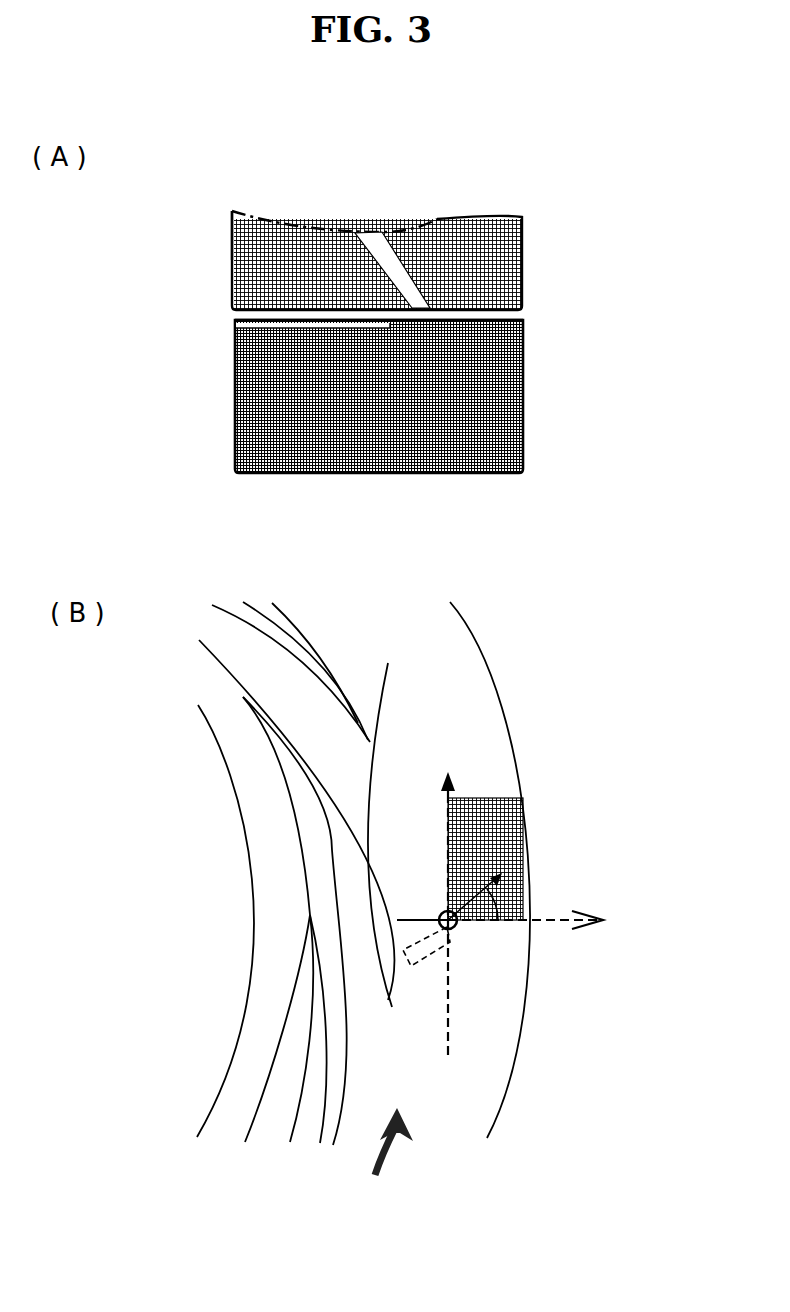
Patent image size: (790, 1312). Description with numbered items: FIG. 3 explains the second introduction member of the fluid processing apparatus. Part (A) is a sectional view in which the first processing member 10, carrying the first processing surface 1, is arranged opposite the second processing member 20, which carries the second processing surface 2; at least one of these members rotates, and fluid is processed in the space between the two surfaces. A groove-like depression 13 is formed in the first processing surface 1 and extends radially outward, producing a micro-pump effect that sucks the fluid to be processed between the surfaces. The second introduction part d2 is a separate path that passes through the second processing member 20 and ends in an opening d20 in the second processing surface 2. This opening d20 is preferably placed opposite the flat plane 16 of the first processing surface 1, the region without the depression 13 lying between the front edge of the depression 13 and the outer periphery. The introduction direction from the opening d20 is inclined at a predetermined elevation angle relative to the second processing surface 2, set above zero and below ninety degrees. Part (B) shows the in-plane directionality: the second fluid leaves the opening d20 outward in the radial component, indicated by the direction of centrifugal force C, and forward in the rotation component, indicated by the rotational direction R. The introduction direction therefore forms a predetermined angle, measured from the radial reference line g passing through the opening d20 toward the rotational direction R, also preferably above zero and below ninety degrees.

The first processing surface 1 is at (445, 318).
The second processing surface 2 is at (330, 309).
The first processing member 10 is at (236, 400).
The groove-like depression 13 is at (255, 333).
The flat plane 16 is at (385, 838).
The second processing member 20 is at (231, 250).
The second introduction part d2 is at (383, 260).
The opening d20 is at (430, 306).
The direction of centrifugal force C is at (518, 913).
The rotational direction R is at (405, 1141).
The reference line g is at (547, 922).